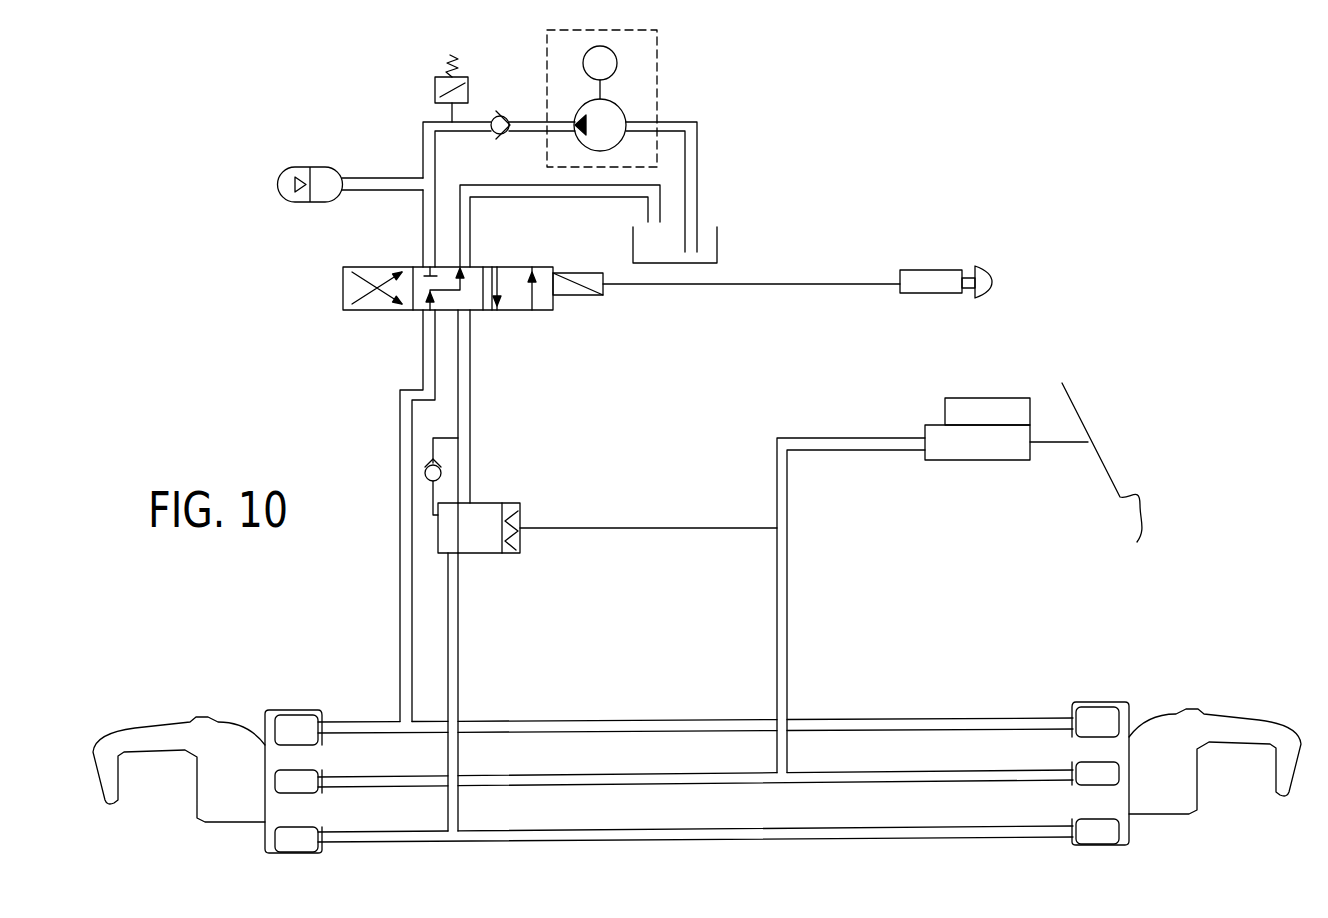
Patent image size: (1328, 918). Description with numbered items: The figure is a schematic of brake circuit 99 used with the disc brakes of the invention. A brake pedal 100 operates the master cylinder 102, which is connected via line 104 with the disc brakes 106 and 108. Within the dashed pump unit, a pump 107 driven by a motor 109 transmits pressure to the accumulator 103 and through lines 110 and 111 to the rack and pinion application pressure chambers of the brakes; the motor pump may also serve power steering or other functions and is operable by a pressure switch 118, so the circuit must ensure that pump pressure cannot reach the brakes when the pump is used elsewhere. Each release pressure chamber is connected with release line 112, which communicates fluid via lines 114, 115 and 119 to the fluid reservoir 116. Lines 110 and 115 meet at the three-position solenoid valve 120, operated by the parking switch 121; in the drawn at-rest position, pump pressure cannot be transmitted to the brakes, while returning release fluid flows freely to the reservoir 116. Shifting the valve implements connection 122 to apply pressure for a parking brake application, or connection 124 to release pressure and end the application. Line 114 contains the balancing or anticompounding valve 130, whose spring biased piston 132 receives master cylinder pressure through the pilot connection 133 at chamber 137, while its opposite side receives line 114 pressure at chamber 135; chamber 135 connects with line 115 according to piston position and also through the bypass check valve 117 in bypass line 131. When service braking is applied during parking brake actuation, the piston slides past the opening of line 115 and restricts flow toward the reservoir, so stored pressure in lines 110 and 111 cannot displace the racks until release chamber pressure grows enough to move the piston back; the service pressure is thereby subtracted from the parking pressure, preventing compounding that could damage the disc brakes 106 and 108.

The brake circuit 99 is at (817, 132).
The brake pedal 100 is at (1122, 490).
The master cylinder 102 is at (977, 462).
The accumulator 103 is at (300, 167).
The line 104 is at (790, 598).
The disc brake 106 is at (183, 722).
The pump 107 is at (657, 87).
The disc brake 108 is at (1208, 712).
The motor 109 is at (617, 53).
The line 110 is at (421, 120).
The line 111 is at (400, 448).
The release line 112 is at (602, 843).
The line 114 is at (459, 641).
The line 115 is at (472, 393).
The fluid reservoir 116 is at (717, 242).
The bypass check valve 117 is at (430, 476).
The pressure switch 118 is at (437, 77).
The line 119 is at (535, 200).
The three-position solenoid valve 120 is at (416, 319).
The parking switch 121 is at (930, 268).
The connection 122 is at (512, 302).
The connection 124 is at (343, 298).
The balancing valve or anticompounding valve 130 is at (461, 519).
The bypass line 131 is at (438, 437).
The spring biased piston 132 is at (483, 546).
The pilot connection 133 is at (598, 529).
The chamber 135 is at (448, 536).
The chamber 137 is at (512, 511).